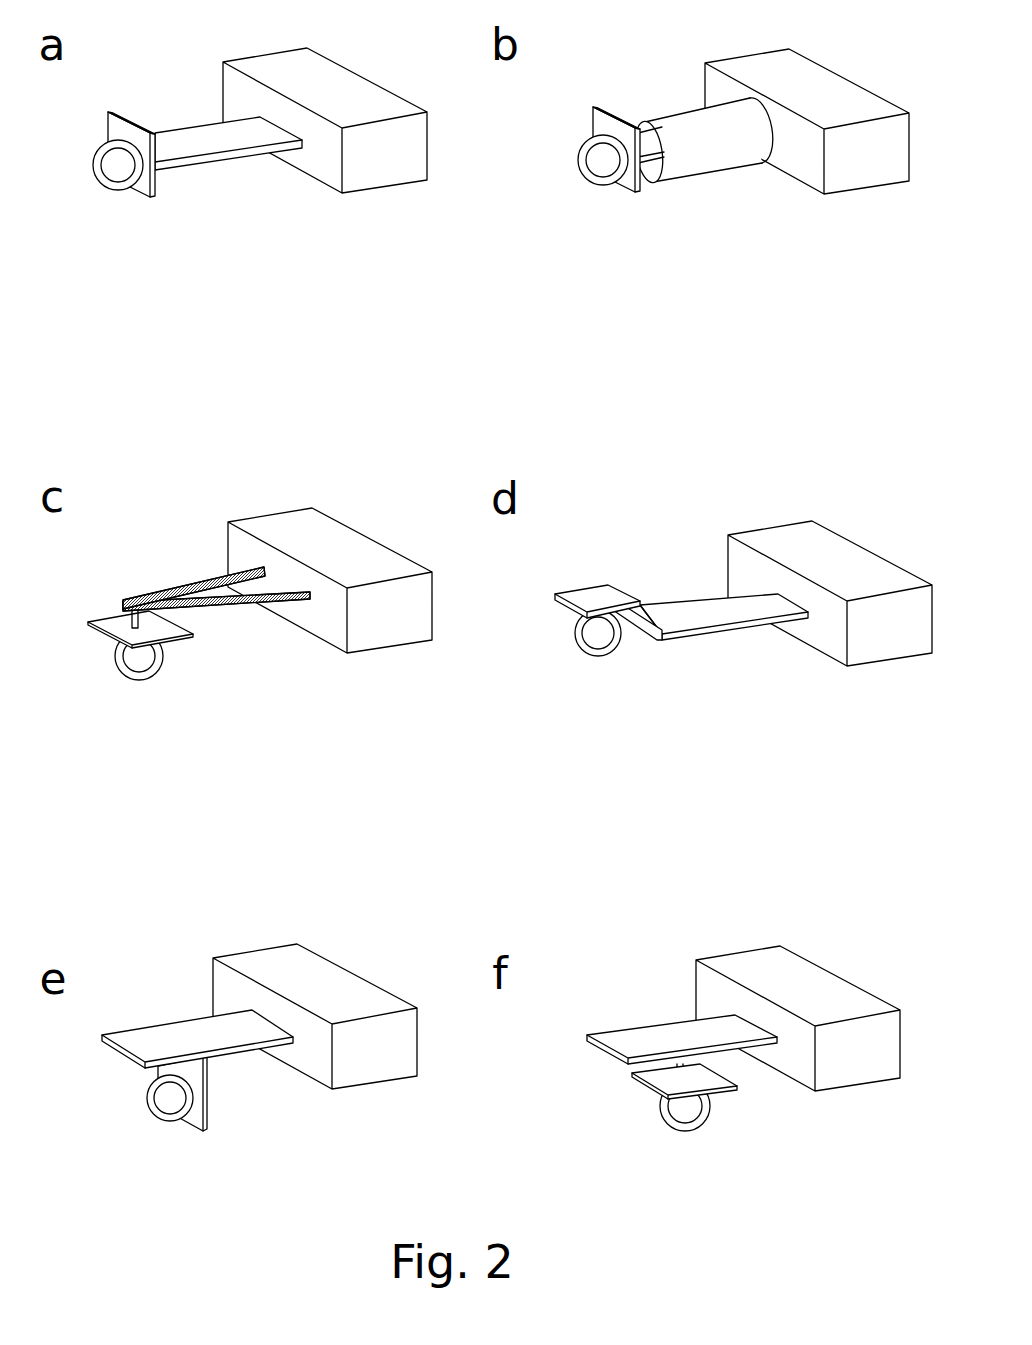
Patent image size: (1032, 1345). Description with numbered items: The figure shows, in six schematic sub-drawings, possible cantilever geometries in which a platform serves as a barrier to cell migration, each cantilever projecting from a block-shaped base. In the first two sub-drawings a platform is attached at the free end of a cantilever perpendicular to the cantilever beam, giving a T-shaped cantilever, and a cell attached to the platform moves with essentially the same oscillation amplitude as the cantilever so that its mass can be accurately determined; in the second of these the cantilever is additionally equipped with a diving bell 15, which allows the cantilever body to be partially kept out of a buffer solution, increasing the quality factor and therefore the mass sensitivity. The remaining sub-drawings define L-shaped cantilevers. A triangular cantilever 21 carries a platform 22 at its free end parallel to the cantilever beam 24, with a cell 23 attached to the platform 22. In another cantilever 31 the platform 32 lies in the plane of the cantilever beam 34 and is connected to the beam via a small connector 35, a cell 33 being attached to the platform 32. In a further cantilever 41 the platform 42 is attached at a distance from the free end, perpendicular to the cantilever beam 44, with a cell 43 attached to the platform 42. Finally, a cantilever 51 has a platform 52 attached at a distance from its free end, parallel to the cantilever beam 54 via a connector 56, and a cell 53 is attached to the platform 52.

The diving bell 15 is at (710, 152).
The triangular cantilever 21 is at (233, 612).
The platform 22 is at (115, 628).
The cell 23 is at (145, 660).
The cantilever beam 24 is at (230, 607).
The cantilever 31 is at (730, 605).
The platform 32 is at (590, 595).
The cell 33 is at (602, 635).
The cantilever beam 34 is at (728, 627).
The small connector 35 is at (637, 623).
The cantilever 41 is at (259, 1066).
The platform 42 is at (207, 1117).
The cell 43 is at (162, 1117).
The cantilever beam 44 is at (252, 1042).
The cantilever 51 is at (724, 1056).
The platform 52 is at (727, 1095).
The cell 53 is at (685, 1115).
The cantilever beam 54 is at (632, 1040).
The connector 56 is at (673, 1065).